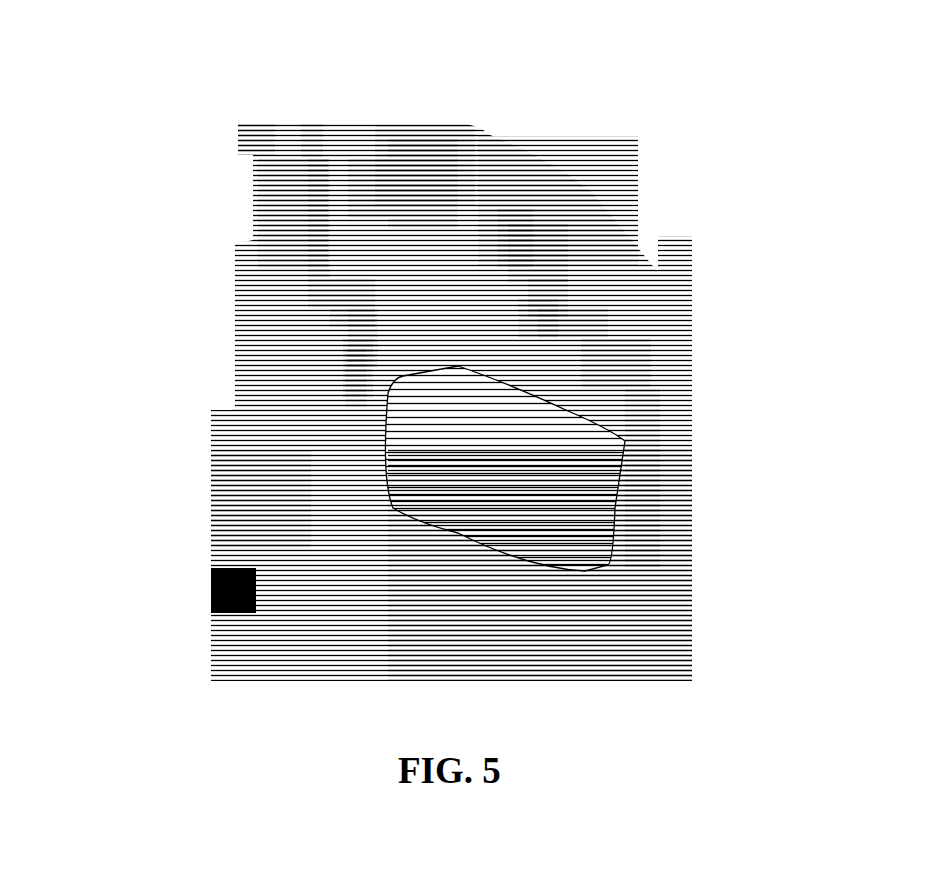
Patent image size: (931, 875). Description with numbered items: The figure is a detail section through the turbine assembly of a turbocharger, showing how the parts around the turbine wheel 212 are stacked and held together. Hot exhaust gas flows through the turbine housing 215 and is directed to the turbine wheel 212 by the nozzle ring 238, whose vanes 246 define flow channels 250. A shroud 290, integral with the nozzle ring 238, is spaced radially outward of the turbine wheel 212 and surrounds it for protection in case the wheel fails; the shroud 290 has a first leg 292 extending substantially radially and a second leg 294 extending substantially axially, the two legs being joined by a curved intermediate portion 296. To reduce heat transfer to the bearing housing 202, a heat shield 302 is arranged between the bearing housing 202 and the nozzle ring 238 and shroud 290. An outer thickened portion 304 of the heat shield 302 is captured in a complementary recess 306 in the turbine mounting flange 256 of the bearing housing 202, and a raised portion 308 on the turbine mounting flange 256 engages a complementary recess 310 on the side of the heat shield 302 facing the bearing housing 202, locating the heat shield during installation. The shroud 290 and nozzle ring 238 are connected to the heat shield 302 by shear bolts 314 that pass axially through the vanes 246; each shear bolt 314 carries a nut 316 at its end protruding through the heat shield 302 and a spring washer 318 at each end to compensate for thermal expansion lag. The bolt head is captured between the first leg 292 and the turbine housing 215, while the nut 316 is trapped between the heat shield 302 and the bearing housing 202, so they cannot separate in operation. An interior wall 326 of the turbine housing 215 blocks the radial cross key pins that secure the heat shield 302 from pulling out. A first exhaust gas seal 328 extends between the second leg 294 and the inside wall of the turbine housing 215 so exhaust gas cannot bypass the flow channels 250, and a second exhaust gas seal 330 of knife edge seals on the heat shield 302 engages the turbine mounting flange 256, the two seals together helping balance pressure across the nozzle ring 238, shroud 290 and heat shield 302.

The bearing housing 202 is at (290, 178).
The turbine wheel 212 is at (637, 652).
The turbine housing 215 is at (545, 250).
The nozzle ring 238 is at (410, 150).
The vanes 246 is at (330, 208).
The flow channels 250 is at (450, 360).
The turbine mounting flange 256 is at (290, 410).
The shroud 290 is at (527, 313).
The first leg 292 is at (533, 290).
The second leg 294 is at (685, 445).
The curved intermediate portion 296 is at (560, 318).
The heat shield 302 is at (240, 550).
The outer thickened portion 304 is at (320, 263).
The complementary recess 306 is at (355, 300).
The raised portion 308 is at (355, 335).
The complementary recess 310 is at (345, 348).
The shear bolts 314 is at (447, 165).
The nut 316 is at (305, 115).
The spring washer 318 is at (352, 195).
The interior wall 326 is at (530, 262).
The first exhaust gas seal 328 is at (607, 333).
The second exhaust gas seal 330 is at (337, 400).